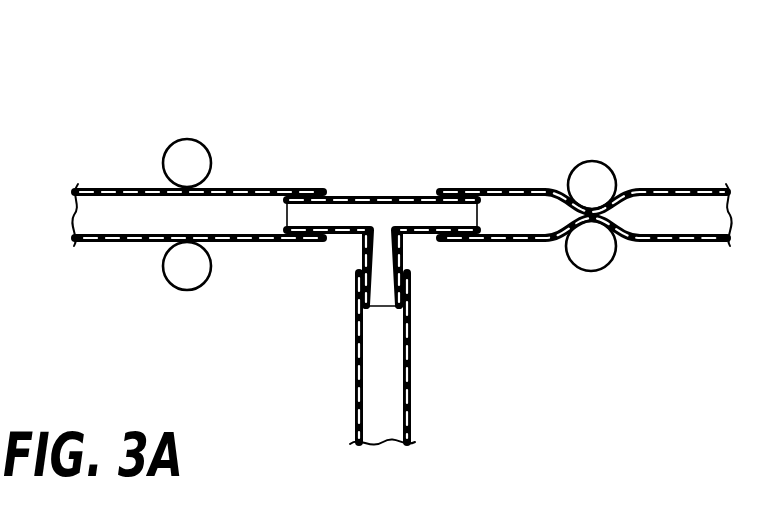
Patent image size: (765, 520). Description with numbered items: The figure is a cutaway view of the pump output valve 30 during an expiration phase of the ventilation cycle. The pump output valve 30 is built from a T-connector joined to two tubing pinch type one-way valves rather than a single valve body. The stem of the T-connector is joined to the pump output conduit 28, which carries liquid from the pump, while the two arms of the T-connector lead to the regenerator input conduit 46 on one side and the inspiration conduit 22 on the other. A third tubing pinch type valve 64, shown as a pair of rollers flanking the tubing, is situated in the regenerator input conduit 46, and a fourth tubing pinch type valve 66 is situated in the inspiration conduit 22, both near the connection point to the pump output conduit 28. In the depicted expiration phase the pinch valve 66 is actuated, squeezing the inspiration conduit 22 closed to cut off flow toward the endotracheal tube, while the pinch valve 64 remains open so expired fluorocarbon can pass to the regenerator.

The pump output valve 30 is at (395, 103).
The inspiration conduit 22 is at (675, 188).
The pump output conduit 28 is at (410, 397).
The regenerator input conduit 46 is at (125, 243).
The third tubing pinch type valve 64 is at (185, 138).
The fourth tubing pinch type valve 66 is at (587, 160).